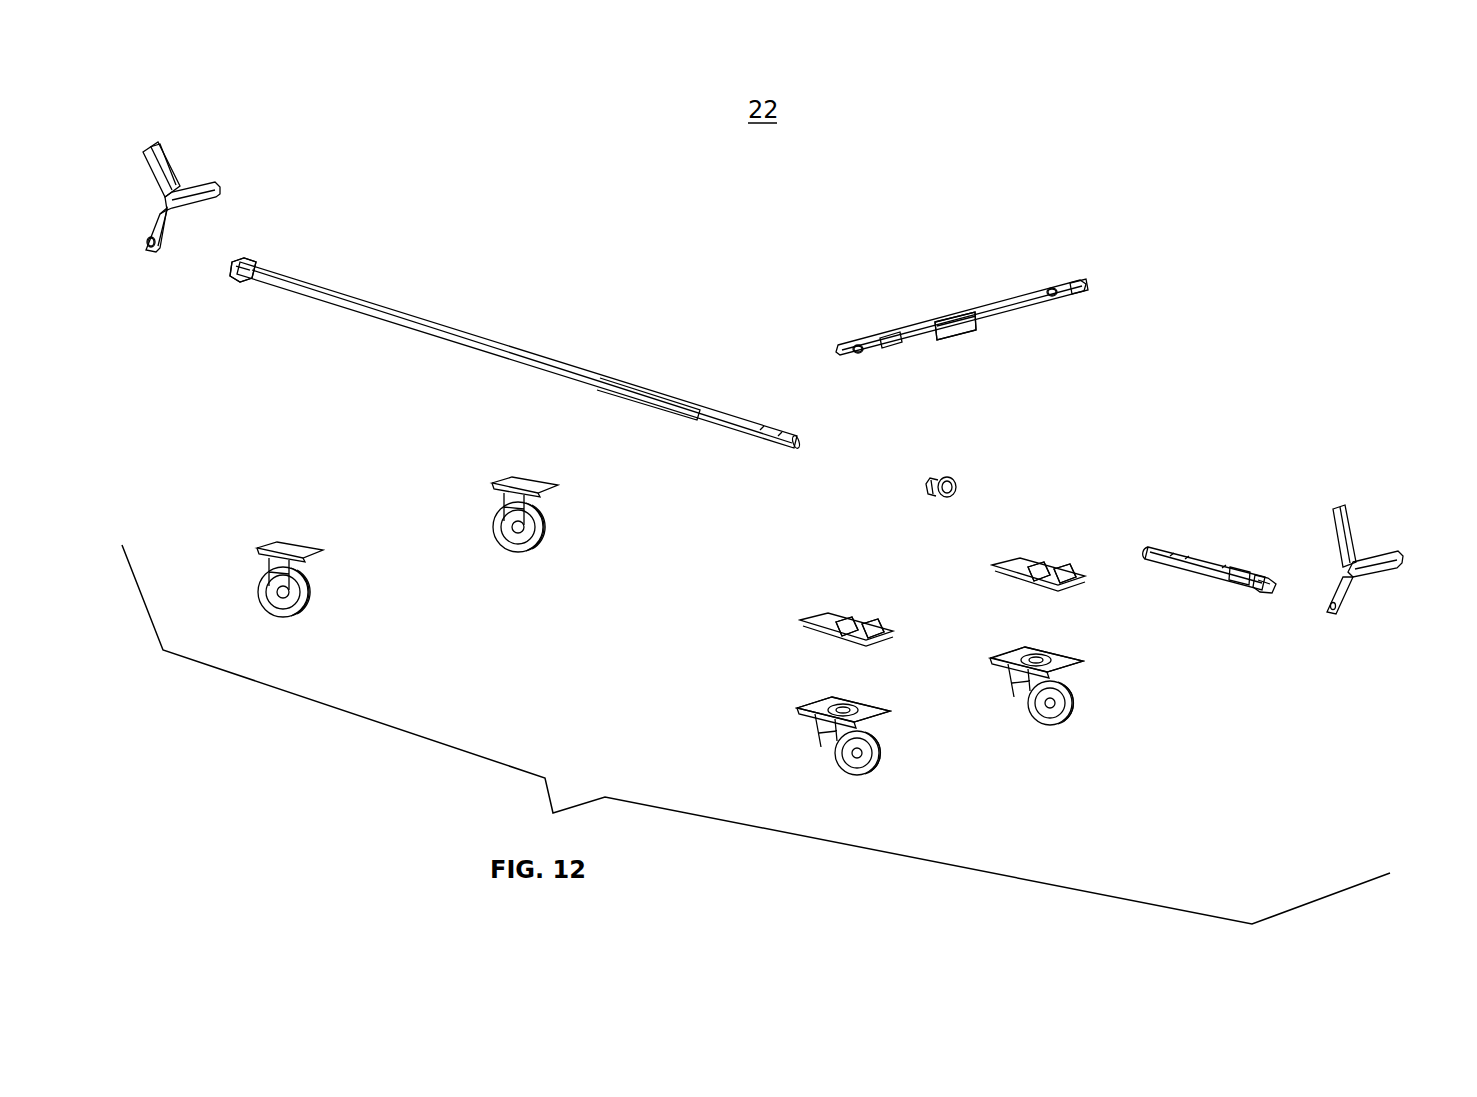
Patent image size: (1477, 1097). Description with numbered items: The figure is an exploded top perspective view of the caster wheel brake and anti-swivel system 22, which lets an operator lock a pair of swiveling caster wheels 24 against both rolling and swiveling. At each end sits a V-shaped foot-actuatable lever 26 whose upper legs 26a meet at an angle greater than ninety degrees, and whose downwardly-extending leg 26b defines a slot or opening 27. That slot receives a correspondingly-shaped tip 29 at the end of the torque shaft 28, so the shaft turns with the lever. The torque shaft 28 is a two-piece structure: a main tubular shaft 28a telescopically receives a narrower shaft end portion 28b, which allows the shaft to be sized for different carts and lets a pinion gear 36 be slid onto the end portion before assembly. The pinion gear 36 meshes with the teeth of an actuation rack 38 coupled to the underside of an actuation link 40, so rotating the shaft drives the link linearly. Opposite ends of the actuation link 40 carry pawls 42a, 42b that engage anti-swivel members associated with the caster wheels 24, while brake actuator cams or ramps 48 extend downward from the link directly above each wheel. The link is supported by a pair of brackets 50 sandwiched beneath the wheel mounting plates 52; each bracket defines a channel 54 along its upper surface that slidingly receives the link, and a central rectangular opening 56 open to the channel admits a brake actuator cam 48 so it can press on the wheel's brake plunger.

The caster wheel brake and anti-swivel system 22 is at (283, 614).
The swiveling caster wheels 24 is at (838, 753).
The foot-actuatable lever 26 is at (212, 160).
The upper legs 26a is at (163, 143).
The downwardly-extending leg 26b is at (157, 222).
The slot or opening 27 is at (155, 251).
The torque shaft 28 is at (523, 348).
The main tubular shaft 28a is at (648, 392).
The shaft end portion 28b is at (1198, 571).
The tip 29 is at (236, 281).
The pinion gear 36 is at (954, 472).
The actuation rack 38 is at (963, 335).
The actuation link 40 is at (1015, 302).
The pawl 42a is at (893, 348).
The pawl 42b is at (1089, 290).
The brake actuator cams or ramps 48 is at (863, 351).
The brackets 50 is at (822, 649).
The wheel mounting plates 52 is at (873, 710).
The channel 54 is at (883, 621).
The rectangular opening 56 is at (865, 616).